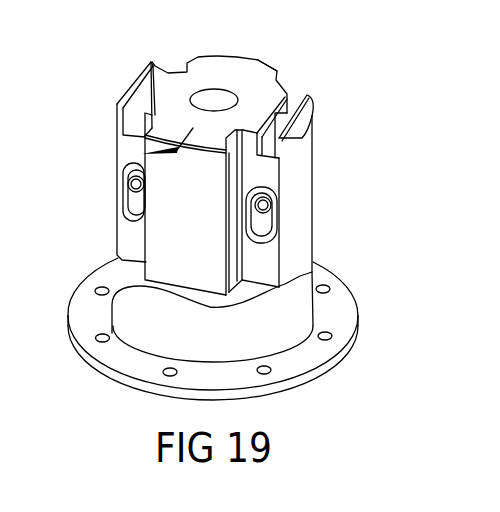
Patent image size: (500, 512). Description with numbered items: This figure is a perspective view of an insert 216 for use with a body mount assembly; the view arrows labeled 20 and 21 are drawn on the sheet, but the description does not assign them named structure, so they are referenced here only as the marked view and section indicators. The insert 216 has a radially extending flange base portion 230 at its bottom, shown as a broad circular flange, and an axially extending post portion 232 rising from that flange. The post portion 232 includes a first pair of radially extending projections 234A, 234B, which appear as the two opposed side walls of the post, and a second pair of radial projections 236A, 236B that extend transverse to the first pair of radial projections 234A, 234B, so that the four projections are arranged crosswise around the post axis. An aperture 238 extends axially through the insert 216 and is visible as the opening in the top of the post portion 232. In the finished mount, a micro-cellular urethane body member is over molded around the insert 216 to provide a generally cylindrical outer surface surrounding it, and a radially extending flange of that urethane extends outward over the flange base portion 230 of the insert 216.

The connector housing assembly 20 is at (233, 72).
The section line / upright tabs 21 is at (124, 49).
The insert 216 is at (112, 237).
The flange base portion 230 is at (90, 356).
The post portion 232 is at (250, 88).
The first radially extending projection 234A is at (127, 153).
The first radially extending projection 234B is at (297, 183).
The second radial projection 236A is at (173, 280).
The second radial projection 236B is at (262, 63).
The aperture 238 is at (209, 90).